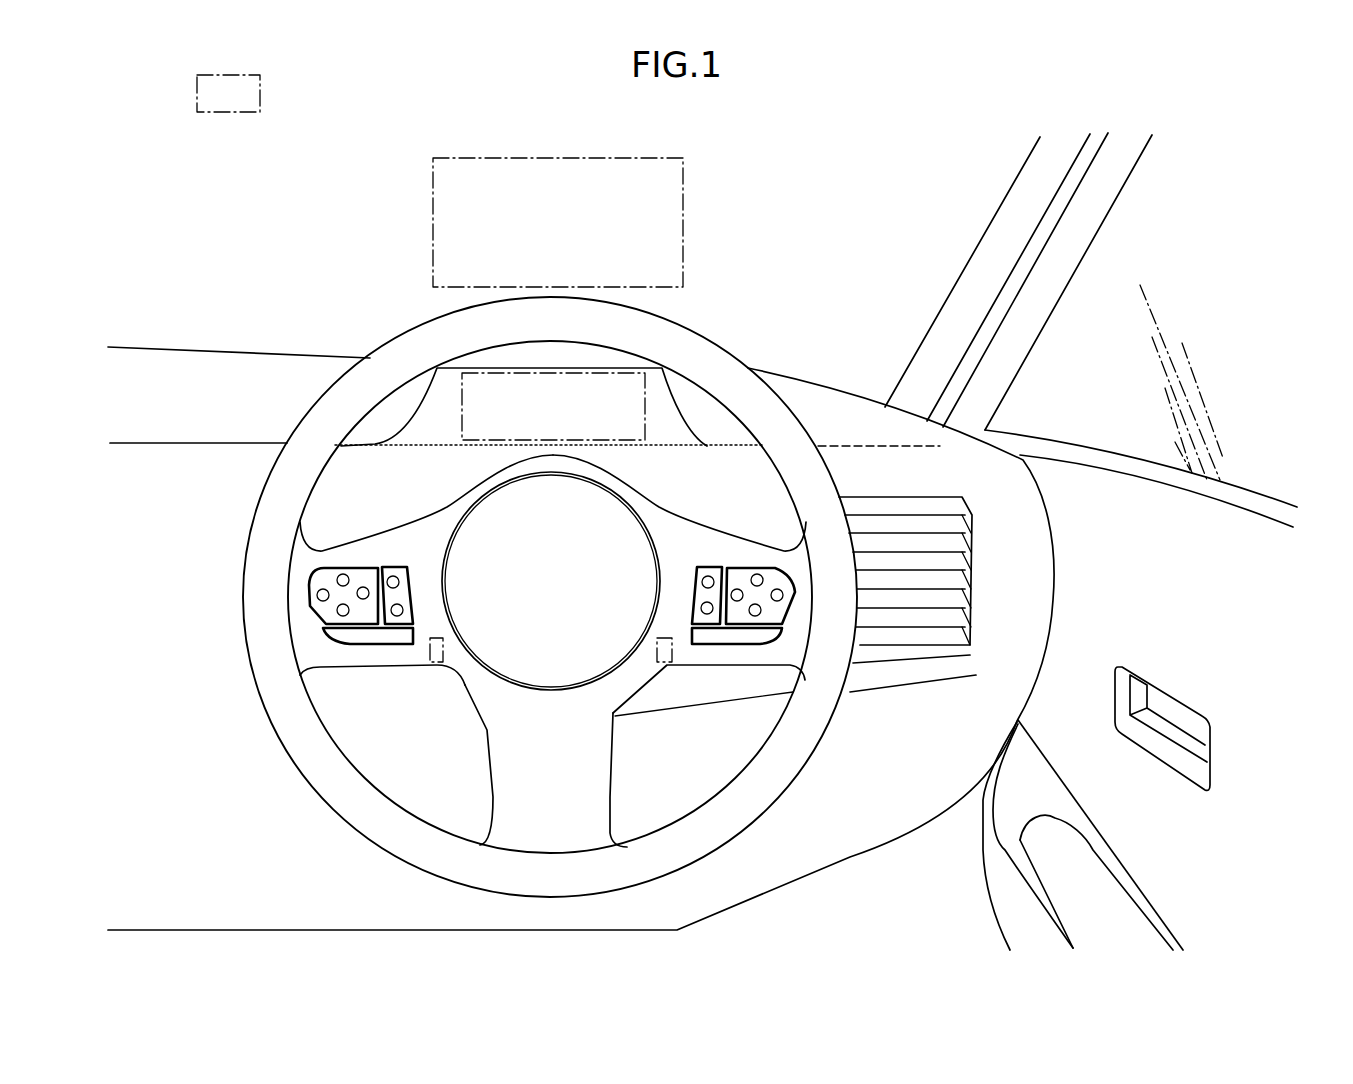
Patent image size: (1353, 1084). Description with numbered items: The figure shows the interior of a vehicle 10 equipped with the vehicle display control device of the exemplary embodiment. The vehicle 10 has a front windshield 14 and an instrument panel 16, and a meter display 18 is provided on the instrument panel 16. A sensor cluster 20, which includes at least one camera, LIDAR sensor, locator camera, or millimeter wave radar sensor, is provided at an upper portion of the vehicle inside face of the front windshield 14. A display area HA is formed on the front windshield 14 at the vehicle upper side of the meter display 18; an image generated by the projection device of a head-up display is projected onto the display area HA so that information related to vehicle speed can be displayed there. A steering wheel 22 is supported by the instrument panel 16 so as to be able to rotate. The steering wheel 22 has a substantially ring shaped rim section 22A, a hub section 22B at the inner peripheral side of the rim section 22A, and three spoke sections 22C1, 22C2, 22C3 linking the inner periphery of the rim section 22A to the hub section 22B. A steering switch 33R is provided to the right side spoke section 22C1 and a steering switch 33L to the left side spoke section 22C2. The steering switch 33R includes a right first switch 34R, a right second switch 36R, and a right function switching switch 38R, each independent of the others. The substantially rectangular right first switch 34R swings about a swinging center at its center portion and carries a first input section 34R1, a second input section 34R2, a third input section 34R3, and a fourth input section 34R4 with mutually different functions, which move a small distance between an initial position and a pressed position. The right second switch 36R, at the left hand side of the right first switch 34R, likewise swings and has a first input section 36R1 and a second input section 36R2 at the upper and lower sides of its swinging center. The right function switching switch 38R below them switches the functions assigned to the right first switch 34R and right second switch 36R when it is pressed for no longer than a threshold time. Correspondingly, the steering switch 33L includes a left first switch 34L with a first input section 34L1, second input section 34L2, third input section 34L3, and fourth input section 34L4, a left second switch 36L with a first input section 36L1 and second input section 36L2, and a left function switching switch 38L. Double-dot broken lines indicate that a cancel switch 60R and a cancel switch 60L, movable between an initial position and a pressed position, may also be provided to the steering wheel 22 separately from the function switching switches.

The vehicle 10 is at (188, 210).
The front windshield 14 is at (963, 213).
The instrument panel 16 is at (163, 370).
The meter display 18 is at (616, 386).
The sensor cluster 20 is at (260, 93).
The display area HA is at (553, 157).
The steering wheel 22 is at (728, 340).
The rim section 22A is at (253, 526).
The hub section 22B is at (462, 688).
The right side spoke section 22C1 is at (670, 517).
The left side spoke section 22C2 is at (445, 513).
The spoke section 22C3 is at (588, 793).
The steering switch 33L is at (308, 636).
The steering switch 33R is at (805, 593).
The left first switch 34L is at (326, 568).
The first input section 34L1 is at (347, 576).
The second input section 34L2 is at (318, 594).
The third input section 34L3 is at (362, 600).
The fourth input section 34L4 is at (338, 611).
The left second switch 36L is at (394, 567).
The first input section 36L1 is at (400, 581).
The second input section 36L2 is at (404, 612).
The left function switching switch 38L is at (378, 648).
The cancel switch 60L is at (432, 663).
The right first switch 34R is at (757, 567).
The first input section 34R1 is at (764, 580).
The second input section 34R2 is at (780, 601).
The third input section 34R3 is at (731, 599).
The fourth input section 34R4 is at (761, 612).
The right second switch 36R is at (710, 566).
The first input section 36R1 is at (701, 580).
The second input section 36R2 is at (700, 607).
The right function switching switch 38R is at (713, 647).
The cancel switch 60R is at (664, 662).